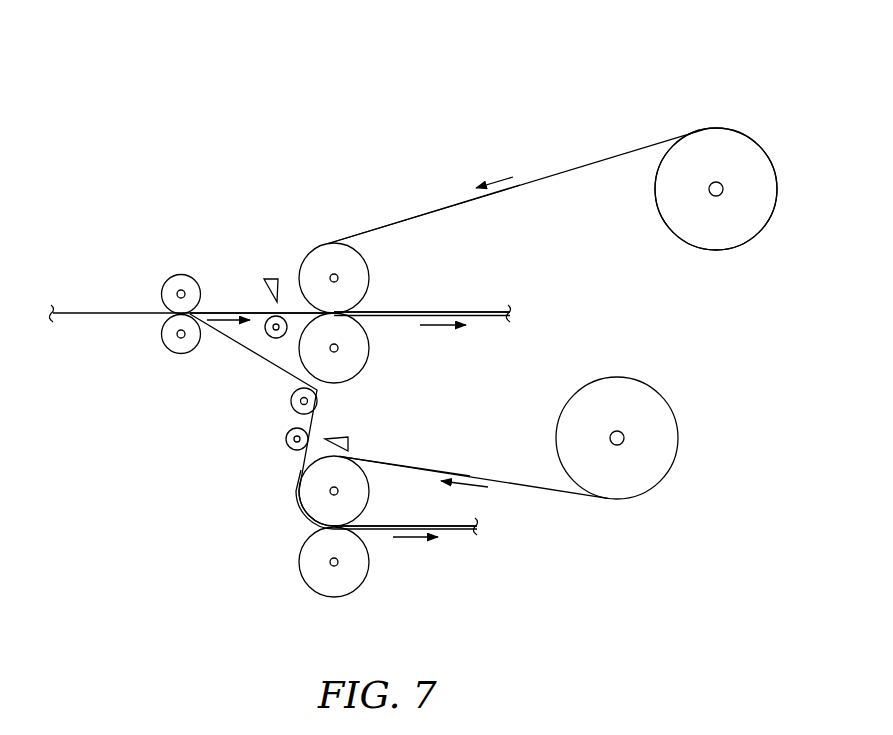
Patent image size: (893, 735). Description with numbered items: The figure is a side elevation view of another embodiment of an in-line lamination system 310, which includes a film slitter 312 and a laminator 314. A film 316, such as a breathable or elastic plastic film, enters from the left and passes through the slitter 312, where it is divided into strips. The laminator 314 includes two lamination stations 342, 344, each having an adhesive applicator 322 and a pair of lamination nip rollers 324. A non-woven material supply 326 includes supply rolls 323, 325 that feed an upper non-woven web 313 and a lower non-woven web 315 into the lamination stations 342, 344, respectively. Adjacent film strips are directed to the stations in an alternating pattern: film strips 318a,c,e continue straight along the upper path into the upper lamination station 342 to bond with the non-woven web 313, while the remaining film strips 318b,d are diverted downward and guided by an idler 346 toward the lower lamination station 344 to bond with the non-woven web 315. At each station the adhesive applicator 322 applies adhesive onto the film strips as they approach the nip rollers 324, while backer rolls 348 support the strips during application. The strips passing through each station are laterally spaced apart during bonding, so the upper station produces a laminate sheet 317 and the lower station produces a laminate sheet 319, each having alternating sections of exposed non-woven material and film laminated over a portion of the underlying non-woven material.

The in-line lamination system 310 is at (178, 170).
The film slitter 312 is at (159, 276).
The non-woven web 313 is at (570, 166).
The laminator 314 is at (336, 222).
The non-woven web 315 is at (539, 490).
The film 316 is at (102, 305).
The laminate sheet 317 is at (485, 303).
The film strips 318a,c,e is at (231, 305).
The film strips 318b,d is at (215, 340).
The laminate sheet 319 is at (490, 531).
The adhesive applicator 322 is at (274, 273).
The supply roll 323 is at (760, 142).
The lamination nip rollers 324 is at (371, 258).
The supply roll 325 is at (683, 423).
The non-woven material supply 326 is at (733, 110).
The lamination station 342 is at (405, 277).
The lamination station 344 is at (455, 458).
The idler 346 is at (290, 407).
The backer rolls 348 is at (263, 335).